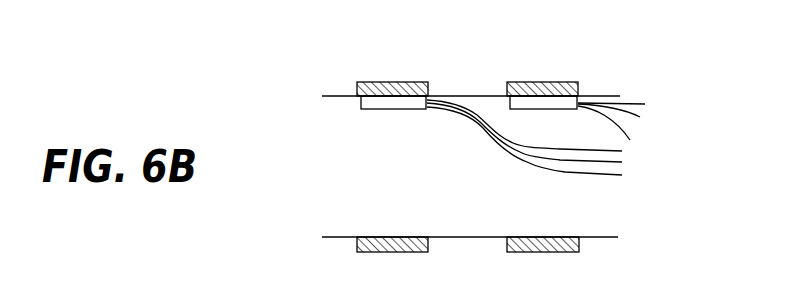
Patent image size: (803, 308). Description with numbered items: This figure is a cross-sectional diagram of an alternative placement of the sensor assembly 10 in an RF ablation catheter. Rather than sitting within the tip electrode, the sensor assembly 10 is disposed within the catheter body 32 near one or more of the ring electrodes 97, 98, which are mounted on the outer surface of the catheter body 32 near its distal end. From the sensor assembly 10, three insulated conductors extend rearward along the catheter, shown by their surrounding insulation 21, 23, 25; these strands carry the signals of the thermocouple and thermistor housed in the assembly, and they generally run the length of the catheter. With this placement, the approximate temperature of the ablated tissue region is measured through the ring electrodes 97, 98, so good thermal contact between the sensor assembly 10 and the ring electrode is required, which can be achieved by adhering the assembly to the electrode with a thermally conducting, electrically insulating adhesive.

The sensor assembly 10 is at (420, 112).
The insulation 21 is at (470, 122).
The insulation 23 is at (506, 154).
The insulation 25 is at (567, 176).
The catheter body 32 is at (618, 240).
The ring electrode 97 is at (380, 82).
The ring electrode 98 is at (525, 82).